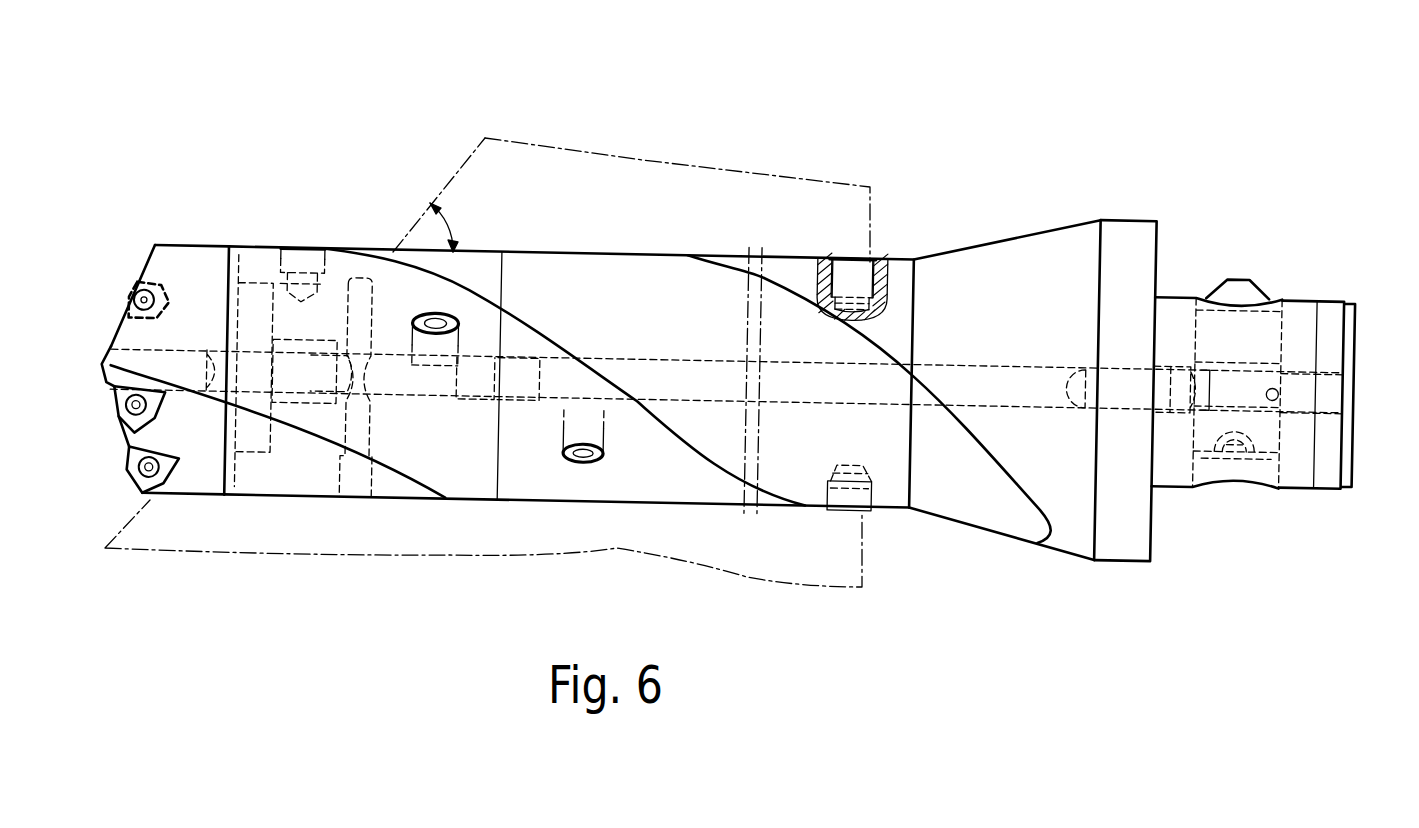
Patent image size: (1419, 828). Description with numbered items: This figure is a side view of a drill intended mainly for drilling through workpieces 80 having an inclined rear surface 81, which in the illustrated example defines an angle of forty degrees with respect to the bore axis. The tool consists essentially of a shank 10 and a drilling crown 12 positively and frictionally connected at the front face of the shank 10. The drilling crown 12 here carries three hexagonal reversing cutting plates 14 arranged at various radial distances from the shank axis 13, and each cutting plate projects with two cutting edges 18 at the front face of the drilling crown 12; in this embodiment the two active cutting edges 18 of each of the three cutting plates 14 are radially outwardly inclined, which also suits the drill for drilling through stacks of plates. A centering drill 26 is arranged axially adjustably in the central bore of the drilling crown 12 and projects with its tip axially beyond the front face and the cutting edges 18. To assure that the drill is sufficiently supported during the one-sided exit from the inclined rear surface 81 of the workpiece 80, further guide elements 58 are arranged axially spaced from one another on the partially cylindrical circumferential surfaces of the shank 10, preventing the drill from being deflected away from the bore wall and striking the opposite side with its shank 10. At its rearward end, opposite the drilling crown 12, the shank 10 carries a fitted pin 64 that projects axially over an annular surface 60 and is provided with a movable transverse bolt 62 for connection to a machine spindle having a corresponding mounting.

The shank 10 is at (805, 290).
The drilling crown 12 is at (197, 493).
The shank axis 13 is at (882, 375).
The reversing cutting plates 14 is at (155, 243).
The cutting edges 18 is at (124, 312).
The centering drill 26 is at (105, 363).
The guide elements 58 is at (432, 316).
The annular surface 60 is at (1160, 518).
The transverse bolt 62 is at (1250, 292).
The fitted pin 64 is at (1302, 318).
The workpiece 80 is at (627, 200).
The inclined rear surface 81 is at (440, 188).